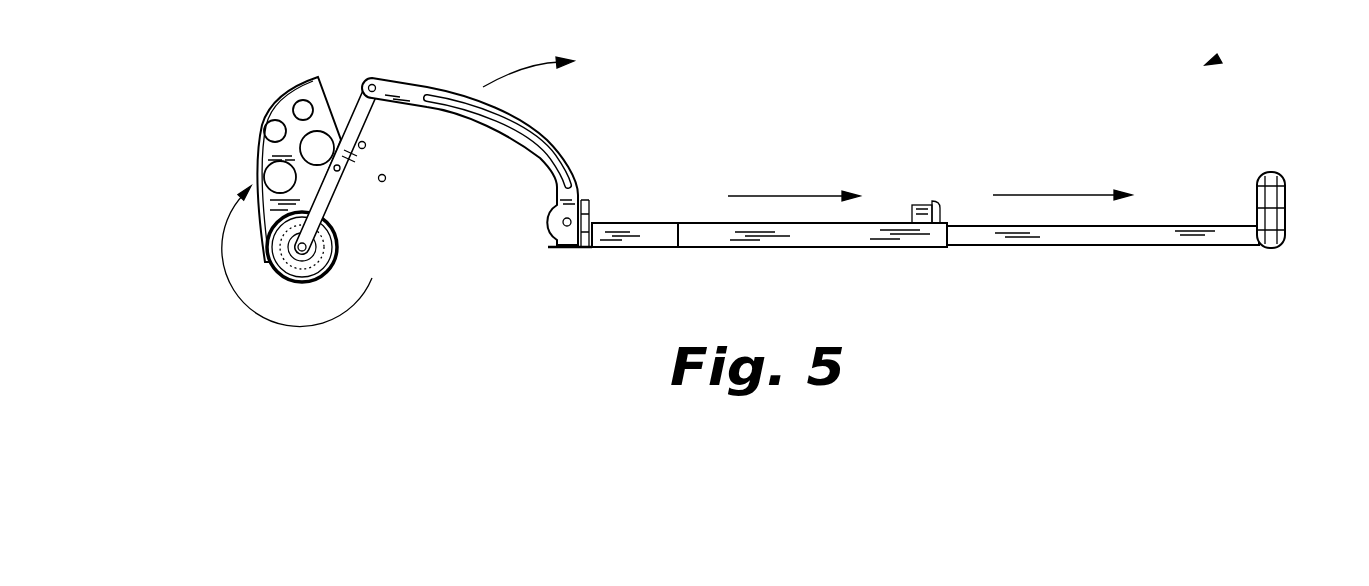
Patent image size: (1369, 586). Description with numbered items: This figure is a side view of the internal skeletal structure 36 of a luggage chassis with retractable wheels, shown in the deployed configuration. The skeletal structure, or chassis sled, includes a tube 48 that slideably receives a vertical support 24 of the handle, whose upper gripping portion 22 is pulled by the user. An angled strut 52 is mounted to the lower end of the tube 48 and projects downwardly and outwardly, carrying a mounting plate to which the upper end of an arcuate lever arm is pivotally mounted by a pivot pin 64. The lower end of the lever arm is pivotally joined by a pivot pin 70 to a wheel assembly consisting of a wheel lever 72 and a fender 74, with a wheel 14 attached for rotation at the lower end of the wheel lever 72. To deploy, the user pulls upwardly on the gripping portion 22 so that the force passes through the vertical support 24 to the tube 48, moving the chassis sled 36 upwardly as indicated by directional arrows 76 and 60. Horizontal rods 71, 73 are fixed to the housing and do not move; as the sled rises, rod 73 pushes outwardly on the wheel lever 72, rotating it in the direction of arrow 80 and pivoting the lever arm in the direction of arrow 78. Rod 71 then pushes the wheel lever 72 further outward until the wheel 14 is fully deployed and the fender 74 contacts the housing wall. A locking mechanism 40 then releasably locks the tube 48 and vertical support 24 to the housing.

The wheel 14 is at (337, 247).
The upper gripping portion 22 is at (1290, 172).
The vertical support 24 is at (1128, 246).
The internal skeletal structure 36 is at (1216, 58).
The locking mechanism 40 is at (920, 203).
The tube 48 is at (863, 248).
The angled strut 52 is at (638, 248).
The directional arrow 60 is at (782, 190).
The pivot pin 64 is at (572, 247).
The pivot pin 70 is at (371, 78).
The horizontal rod 71 is at (366, 145).
The wheel lever 72 is at (335, 197).
The horizontal rod 73 is at (386, 178).
The fender 74 is at (265, 107).
The directional arrow 76 is at (1062, 190).
The directional arrow 78 is at (515, 66).
The directional arrow 80 is at (290, 326).